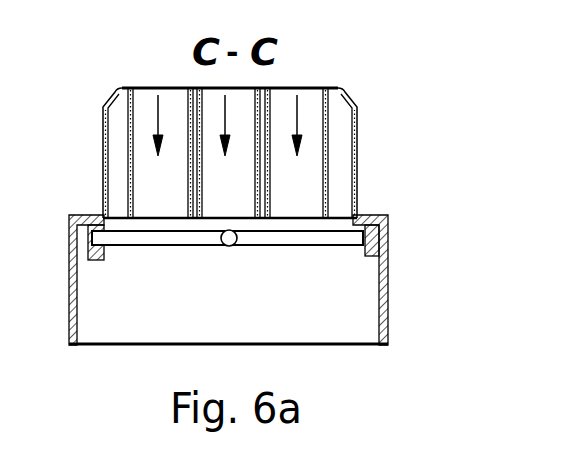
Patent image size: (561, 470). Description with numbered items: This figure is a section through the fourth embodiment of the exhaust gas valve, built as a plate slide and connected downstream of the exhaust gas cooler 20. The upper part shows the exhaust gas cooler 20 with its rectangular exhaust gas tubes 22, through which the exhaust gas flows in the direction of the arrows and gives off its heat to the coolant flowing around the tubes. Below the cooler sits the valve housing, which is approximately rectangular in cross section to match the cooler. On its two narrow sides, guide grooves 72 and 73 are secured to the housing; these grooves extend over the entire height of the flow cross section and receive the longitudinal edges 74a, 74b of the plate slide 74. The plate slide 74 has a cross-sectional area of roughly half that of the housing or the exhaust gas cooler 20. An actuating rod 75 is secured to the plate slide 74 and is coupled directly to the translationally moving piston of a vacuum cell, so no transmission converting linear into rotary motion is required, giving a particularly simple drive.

The exhaust gas cooler 20 is at (353, 153).
The exhaust gas tubes 22 is at (228, 153).
The guide groove 72 is at (365, 257).
The guide groove 73 is at (92, 262).
The plate slide 74 is at (165, 246).
The longitudinal edge 74a is at (390, 237).
The longitudinal edge 74b is at (70, 232).
The actuating rod 75 is at (230, 246).